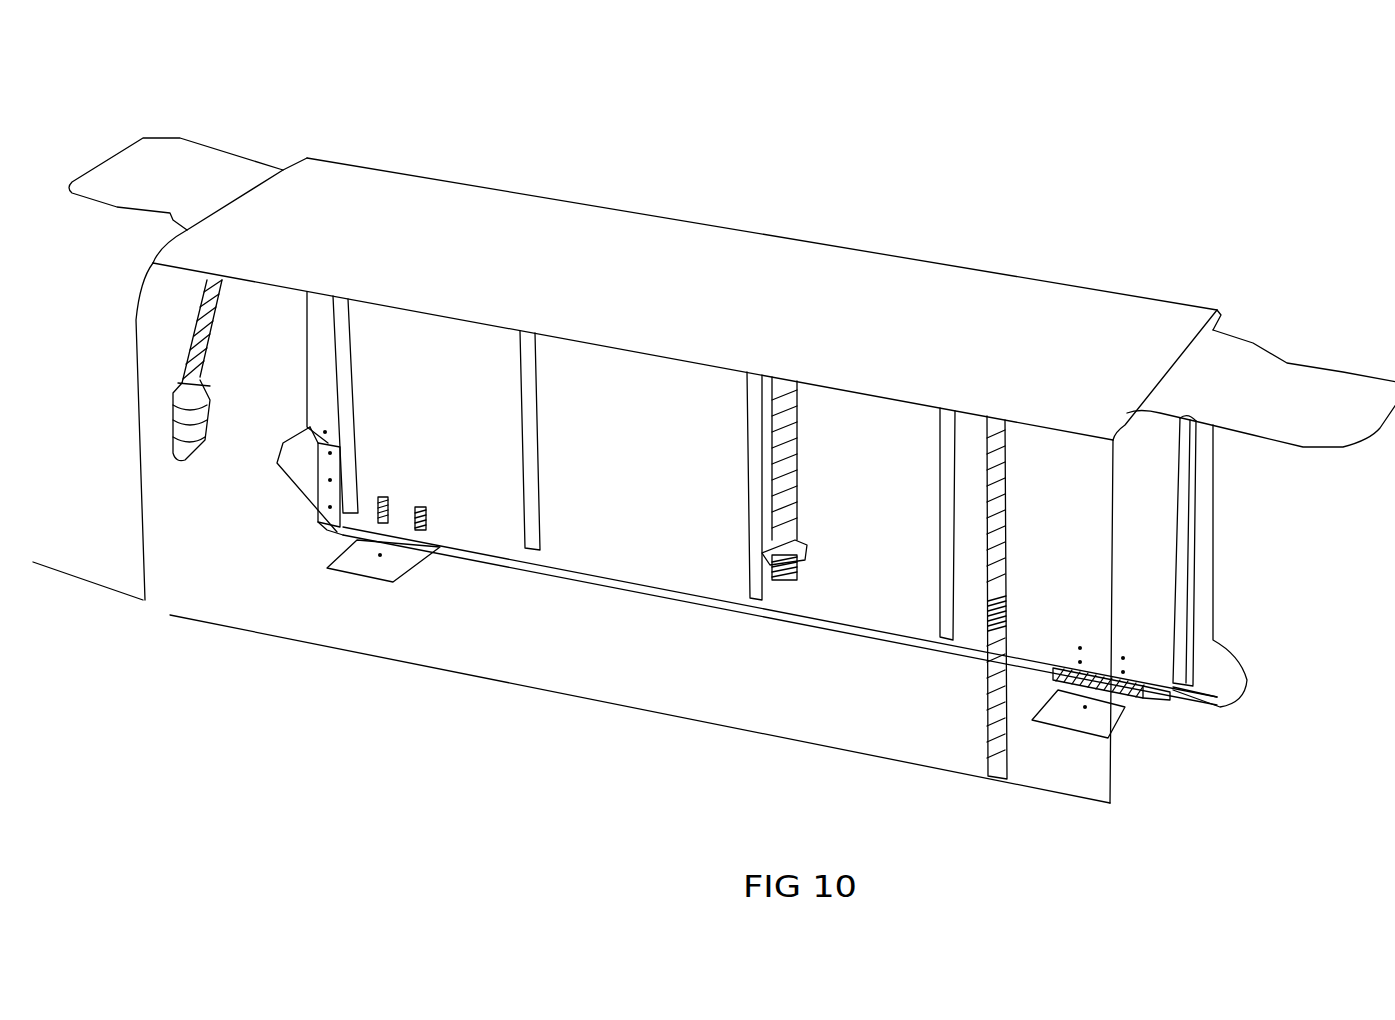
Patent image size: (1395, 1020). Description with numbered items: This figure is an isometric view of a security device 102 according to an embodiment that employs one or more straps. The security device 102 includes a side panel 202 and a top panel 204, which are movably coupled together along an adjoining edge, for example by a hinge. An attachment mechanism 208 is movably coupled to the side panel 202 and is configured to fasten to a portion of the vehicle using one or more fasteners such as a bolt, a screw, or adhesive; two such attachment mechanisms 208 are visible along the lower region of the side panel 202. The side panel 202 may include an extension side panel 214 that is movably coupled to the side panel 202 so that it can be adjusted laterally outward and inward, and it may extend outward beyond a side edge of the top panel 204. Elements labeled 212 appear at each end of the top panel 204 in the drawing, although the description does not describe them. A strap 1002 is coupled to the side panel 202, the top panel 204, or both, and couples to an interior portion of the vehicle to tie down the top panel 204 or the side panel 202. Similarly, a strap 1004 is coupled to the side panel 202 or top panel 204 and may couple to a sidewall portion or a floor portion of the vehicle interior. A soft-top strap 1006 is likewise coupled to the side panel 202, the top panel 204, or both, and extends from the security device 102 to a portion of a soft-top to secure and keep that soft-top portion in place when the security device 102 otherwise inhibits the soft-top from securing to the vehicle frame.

The security device 102 is at (266, 74).
The side panel 202 is at (650, 486).
The top panel 204 is at (515, 210).
The attachment mechanism 208 is at (397, 573).
The end flange 212 is at (143, 167).
The extension side panel 214 is at (1213, 523).
The strap 1002 is at (202, 355).
The strap 1004 is at (995, 572).
The soft-top strap 1006 is at (783, 517).